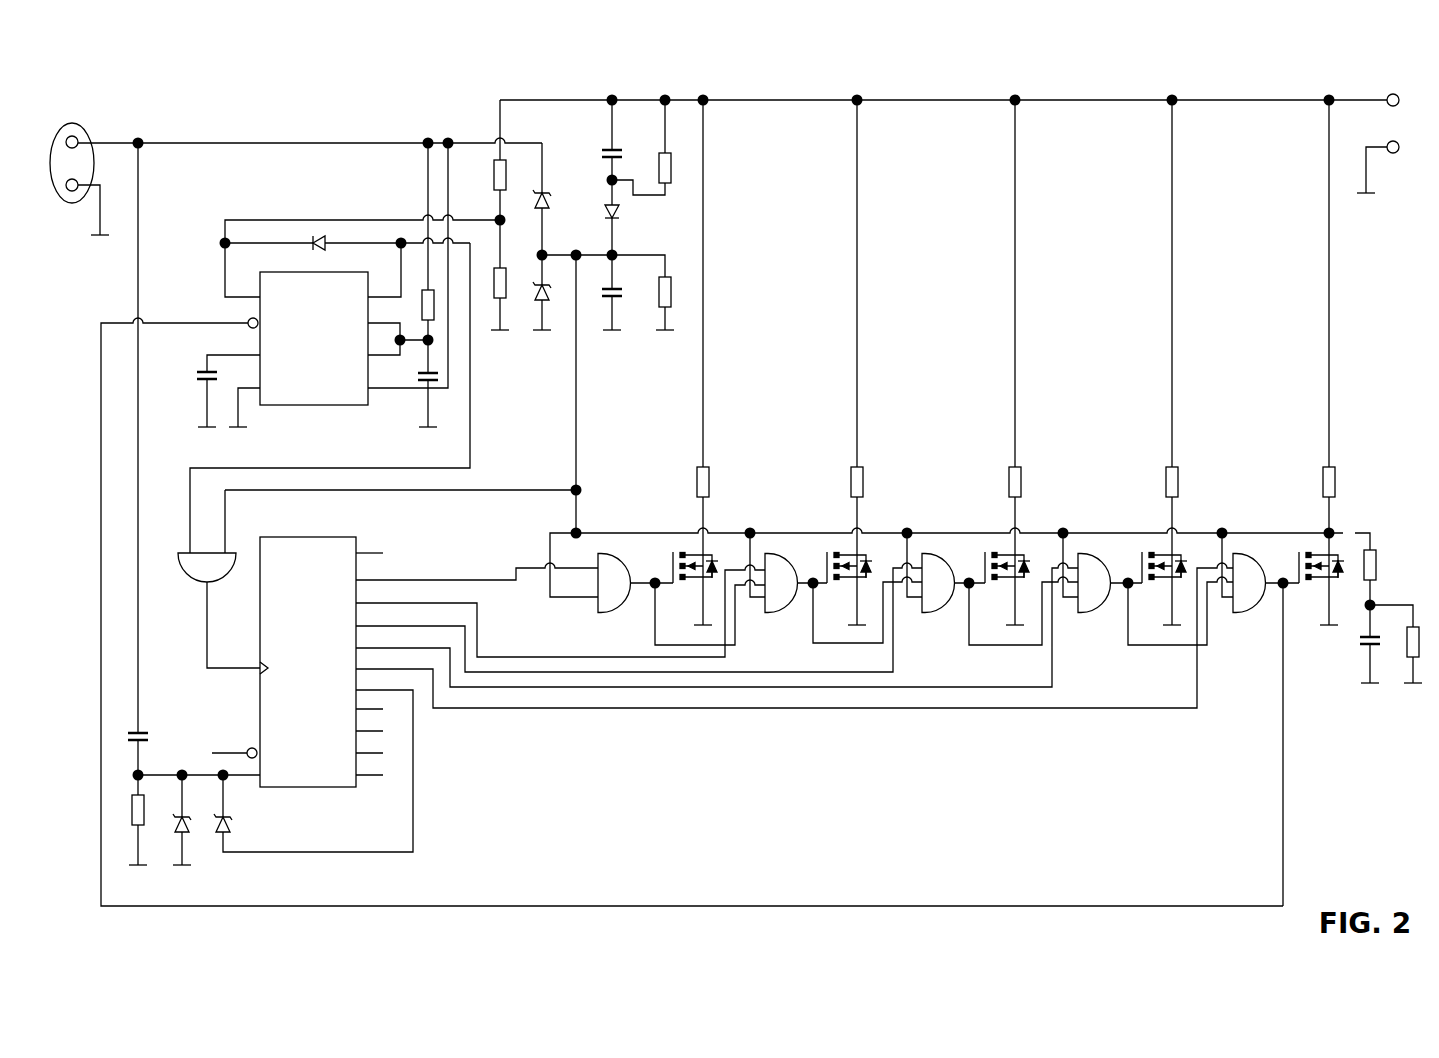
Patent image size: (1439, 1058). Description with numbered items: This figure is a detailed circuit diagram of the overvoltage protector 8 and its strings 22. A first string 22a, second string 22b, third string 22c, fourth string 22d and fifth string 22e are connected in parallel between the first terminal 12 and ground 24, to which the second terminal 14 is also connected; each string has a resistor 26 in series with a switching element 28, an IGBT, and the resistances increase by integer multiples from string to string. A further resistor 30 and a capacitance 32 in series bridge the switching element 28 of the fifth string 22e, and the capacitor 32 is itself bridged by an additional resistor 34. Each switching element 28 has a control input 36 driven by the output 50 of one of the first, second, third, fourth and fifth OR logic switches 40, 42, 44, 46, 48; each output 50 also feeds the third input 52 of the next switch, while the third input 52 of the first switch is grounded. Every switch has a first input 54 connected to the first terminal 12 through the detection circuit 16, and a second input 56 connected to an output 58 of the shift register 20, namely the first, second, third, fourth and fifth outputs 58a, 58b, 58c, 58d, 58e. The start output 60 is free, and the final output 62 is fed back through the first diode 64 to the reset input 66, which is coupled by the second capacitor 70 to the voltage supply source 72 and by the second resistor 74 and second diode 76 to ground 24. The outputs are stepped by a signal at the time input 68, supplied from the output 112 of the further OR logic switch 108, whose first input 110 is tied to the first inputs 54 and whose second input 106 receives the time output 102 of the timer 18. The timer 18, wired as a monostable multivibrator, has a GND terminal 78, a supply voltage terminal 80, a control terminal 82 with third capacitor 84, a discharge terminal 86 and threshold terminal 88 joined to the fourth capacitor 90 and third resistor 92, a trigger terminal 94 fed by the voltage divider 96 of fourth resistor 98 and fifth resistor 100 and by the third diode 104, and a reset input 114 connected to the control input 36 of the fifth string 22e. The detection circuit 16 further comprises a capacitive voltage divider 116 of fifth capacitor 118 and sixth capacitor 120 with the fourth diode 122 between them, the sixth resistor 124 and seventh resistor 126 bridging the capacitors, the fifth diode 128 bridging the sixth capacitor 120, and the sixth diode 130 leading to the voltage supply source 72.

The overvoltage protector 8 is at (1236, 84).
The first terminal 12 is at (1393, 93).
The second terminal 14 is at (1398, 152).
The detection circuit 16 is at (592, 95).
The timer 18 is at (300, 272).
The shift register 20 is at (300, 788).
The string 22 is at (1334, 360).
The first string 22a is at (706, 372).
The second string 22b is at (856, 180).
The third string 22c is at (1014, 180).
The fourth string 22d is at (1171, 180).
The fifth string 22e is at (1328, 180).
The ground 24 is at (207, 428).
The resistor 26 is at (697, 470).
The switching element 28 is at (713, 586).
The further resistor 30 is at (1377, 562).
The capacitance 32 is at (1364, 641).
The additional resistor 34 is at (1413, 685).
The control input 36 is at (669, 580).
The first OR logic switch 40 is at (630, 592).
The second OR logic switch 42 is at (793, 592).
The third OR logic switch 44 is at (950, 592).
The fourth OR logic switch 46 is at (1108, 592).
The fifth OR logic switch 48 is at (1266, 592).
The output 50 is at (645, 580).
The third input 52 is at (730, 572).
The first input 54 is at (590, 600).
The second input 56 is at (548, 570).
The output 58 is at (300, 582).
The first output 58a is at (360, 580).
The second output 58b is at (360, 603).
The third output 58c is at (360, 626).
The fourth output 58d is at (360, 648).
The fifth output 58e is at (360, 669).
The start output 60 is at (383, 553).
The final output 62 is at (362, 692).
The first diode 64 is at (222, 835).
The reset input 66 is at (256, 778).
The time input 68 is at (257, 672).
The second capacitor 70 is at (128, 737).
The voltage supply source 72 is at (88, 140).
The second resistor 74 is at (132, 808).
The second diode 76 is at (181, 835).
The GND terminal 78 is at (240, 395).
The supply voltage terminal 80 is at (372, 410).
The control terminal 82 is at (255, 356).
The third capacitor 84 is at (200, 377).
The discharge terminal 86 is at (372, 293).
The threshold terminal 88 is at (370, 392).
The fourth capacitor 90 is at (447, 375).
The third resistor 92 is at (438, 305).
The trigger terminal 94 is at (258, 297).
The voltage divider 96 is at (492, 90).
The fourth resistor 98 is at (493, 172).
The fifth resistor 100 is at (494, 275).
The time output 102 is at (368, 320).
The third diode 104 is at (321, 242).
The second input 106 is at (188, 553).
The further OR logic switch 108 is at (182, 575).
The first input 110 is at (226, 553).
The output 112 is at (207, 605).
The reset input 114 is at (247, 322).
The capacitive voltage divider 116 is at (624, 95).
The fifth capacitor 118 is at (626, 154).
The sixth capacitor 120 is at (618, 292).
The fourth diode 122 is at (620, 210).
The sixth resistor 124 is at (672, 168).
The seventh resistor 126 is at (672, 288).
The fifth diode 128 is at (548, 290).
The sixth diode 130 is at (548, 203).